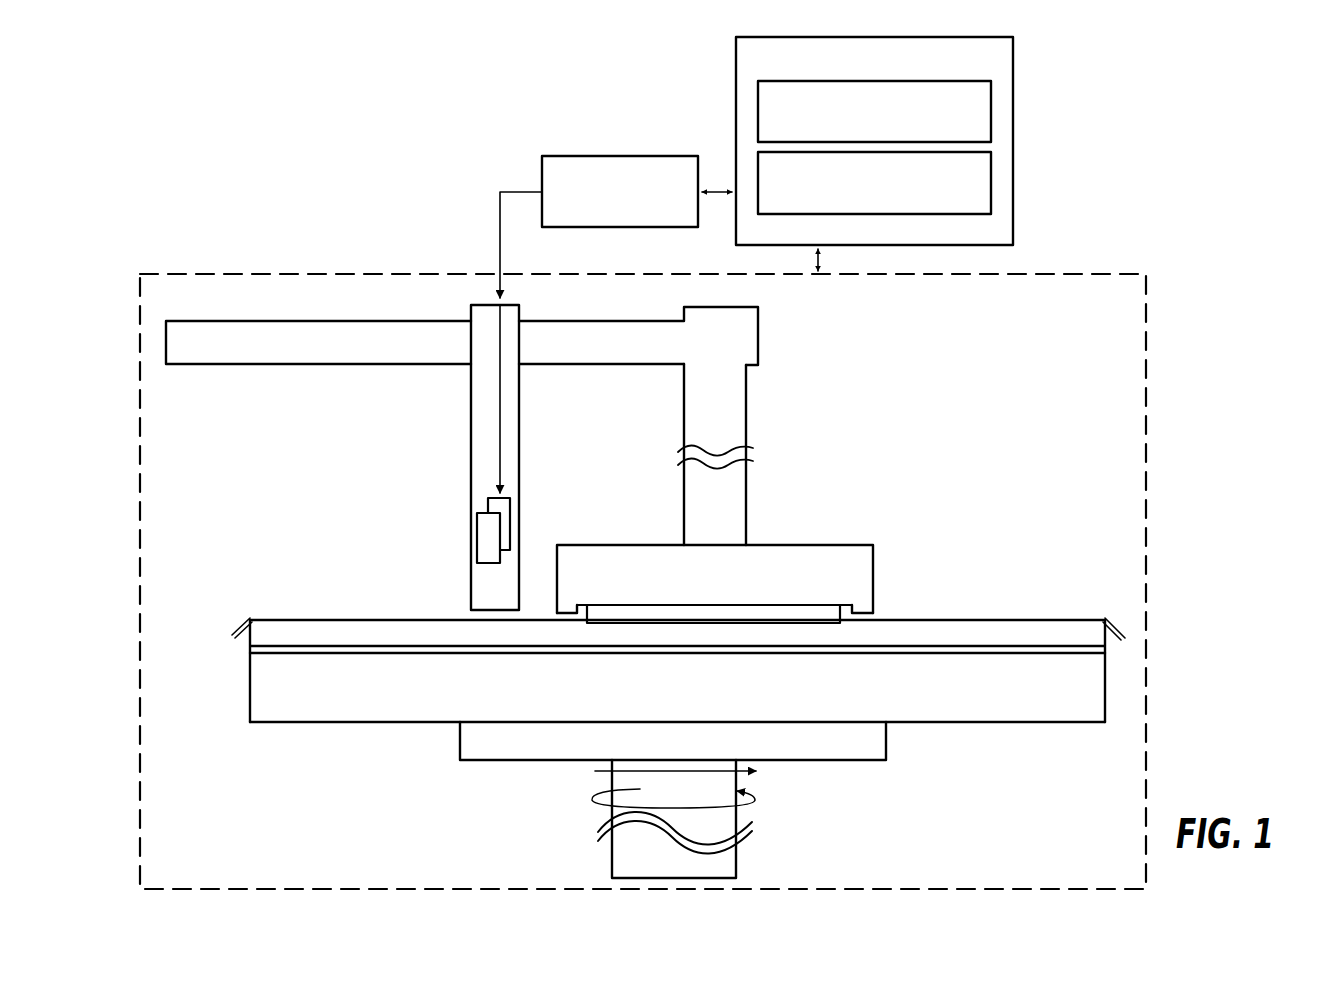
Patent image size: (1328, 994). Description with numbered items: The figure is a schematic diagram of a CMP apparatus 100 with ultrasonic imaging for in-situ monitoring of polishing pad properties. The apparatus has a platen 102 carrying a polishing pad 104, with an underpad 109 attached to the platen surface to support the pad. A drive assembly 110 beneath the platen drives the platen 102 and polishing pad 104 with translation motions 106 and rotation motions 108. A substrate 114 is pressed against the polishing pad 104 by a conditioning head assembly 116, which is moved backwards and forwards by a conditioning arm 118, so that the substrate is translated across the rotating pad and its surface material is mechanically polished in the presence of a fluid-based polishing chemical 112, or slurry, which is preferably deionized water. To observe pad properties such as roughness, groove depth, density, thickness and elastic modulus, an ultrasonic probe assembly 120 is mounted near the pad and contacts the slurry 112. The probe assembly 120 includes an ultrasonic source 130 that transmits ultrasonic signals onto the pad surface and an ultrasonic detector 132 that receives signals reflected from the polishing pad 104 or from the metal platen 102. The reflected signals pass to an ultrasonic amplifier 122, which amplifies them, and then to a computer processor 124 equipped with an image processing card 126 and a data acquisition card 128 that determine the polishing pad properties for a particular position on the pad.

The CMP apparatus 100 is at (1147, 467).
The platen 102 is at (934, 711).
The polishing pad 104 is at (1007, 638).
The translation motions 106 is at (652, 768).
The rotation motions 108 is at (592, 800).
The underpad 109 is at (765, 652).
The drive assembly 110 is at (716, 868).
The fluid-based polishing chemical 112 is at (959, 617).
The substrate 114 is at (698, 614).
The conditioning head assembly 116 is at (873, 571).
The conditioning arm 118 is at (563, 364).
The ultrasonic probe assembly 120 is at (512, 480).
The ultrasonic amplifier 122 is at (605, 156).
The computer processor 124 is at (1013, 110).
The image processing card 126 is at (960, 81).
The data acquisition card 128 is at (895, 214).
The ultrasonic source 130 is at (513, 530).
The ultrasonic detector 132 is at (477, 534).